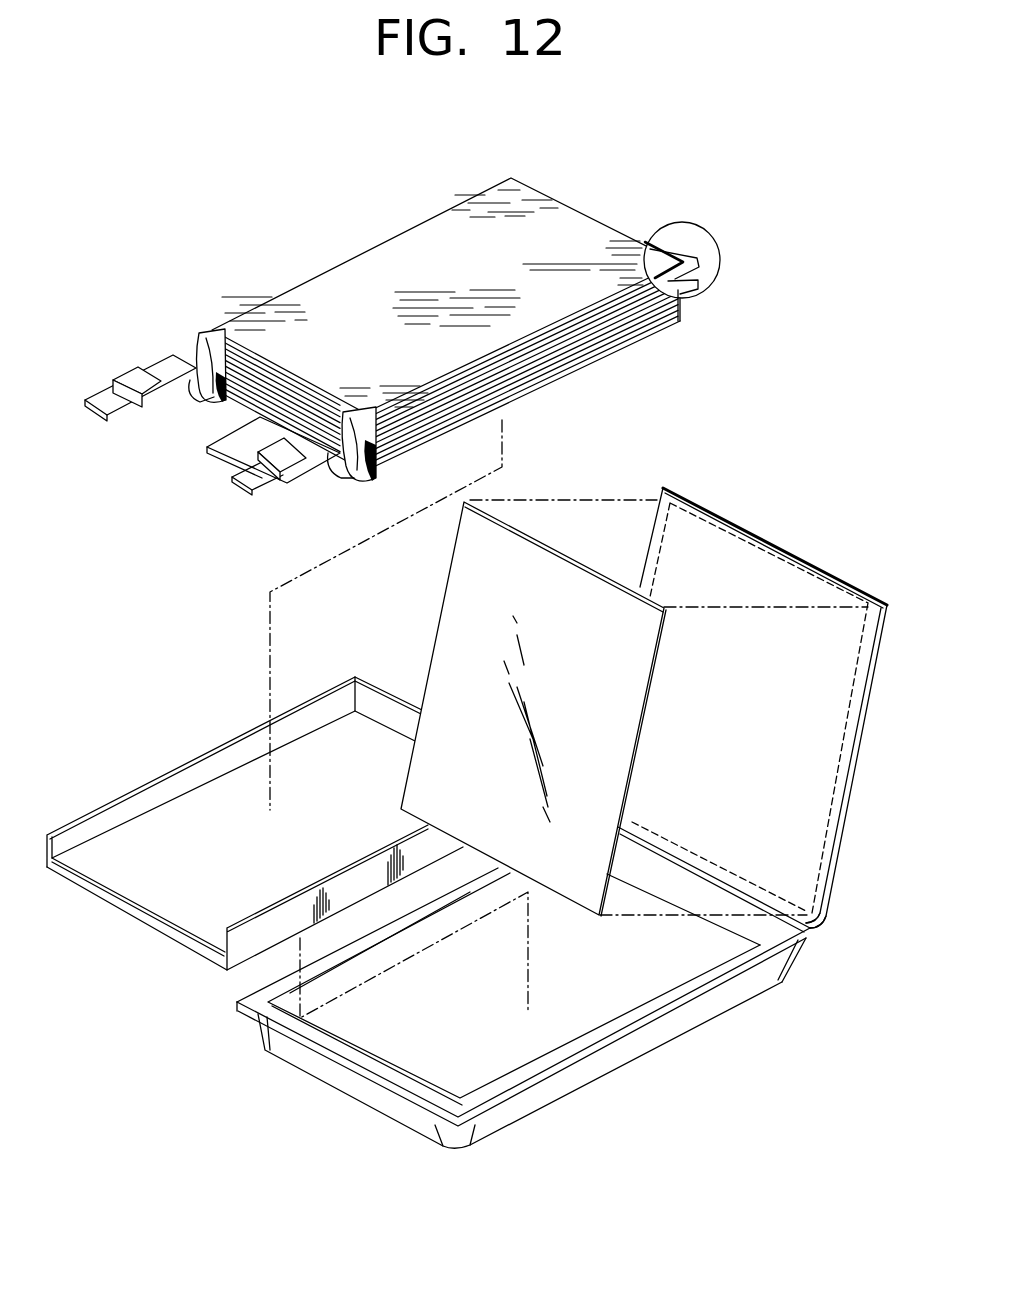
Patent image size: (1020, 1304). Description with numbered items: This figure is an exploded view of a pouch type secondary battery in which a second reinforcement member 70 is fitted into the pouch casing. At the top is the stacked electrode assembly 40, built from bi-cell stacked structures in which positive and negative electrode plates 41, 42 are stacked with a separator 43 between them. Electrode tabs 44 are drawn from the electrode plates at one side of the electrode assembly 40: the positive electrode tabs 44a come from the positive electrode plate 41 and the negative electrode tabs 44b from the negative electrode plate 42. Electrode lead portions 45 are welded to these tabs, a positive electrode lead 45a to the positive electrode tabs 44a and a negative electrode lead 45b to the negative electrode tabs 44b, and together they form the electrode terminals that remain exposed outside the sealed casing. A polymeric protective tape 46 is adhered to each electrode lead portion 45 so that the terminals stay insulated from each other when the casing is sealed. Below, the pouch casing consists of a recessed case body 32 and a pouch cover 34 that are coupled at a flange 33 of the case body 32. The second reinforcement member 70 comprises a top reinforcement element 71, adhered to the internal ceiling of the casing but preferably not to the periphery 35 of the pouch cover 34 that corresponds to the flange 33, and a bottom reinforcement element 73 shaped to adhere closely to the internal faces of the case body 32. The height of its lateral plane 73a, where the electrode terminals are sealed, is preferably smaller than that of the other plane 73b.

The electrode assembly 40 is at (584, 209).
The positive electrode plate 41 is at (685, 263).
The negative electrode plate 42 is at (700, 287).
The separator 43 is at (702, 268).
The electrode tabs 44 is at (244, 356).
The positive electrode tabs 44a is at (207, 356).
The negative electrode tabs 44b is at (356, 418).
The electrode lead portions 45 is at (201, 451).
The positive electrode lead 45a is at (102, 404).
The negative electrode lead 45b is at (257, 476).
The polymeric protective tape 46 is at (132, 380).
The second reinforcement member 70 is at (471, 791).
The top reinforcement element 71 is at (521, 709).
The bottom reinforcement element 73 is at (255, 826).
The lateral plane 73a is at (147, 918).
The other plane 73b is at (100, 832).
The periphery 35 is at (793, 567).
The pouch cover 34 is at (828, 866).
The case body 32 is at (717, 1003).
The flange 33 is at (600, 1018).